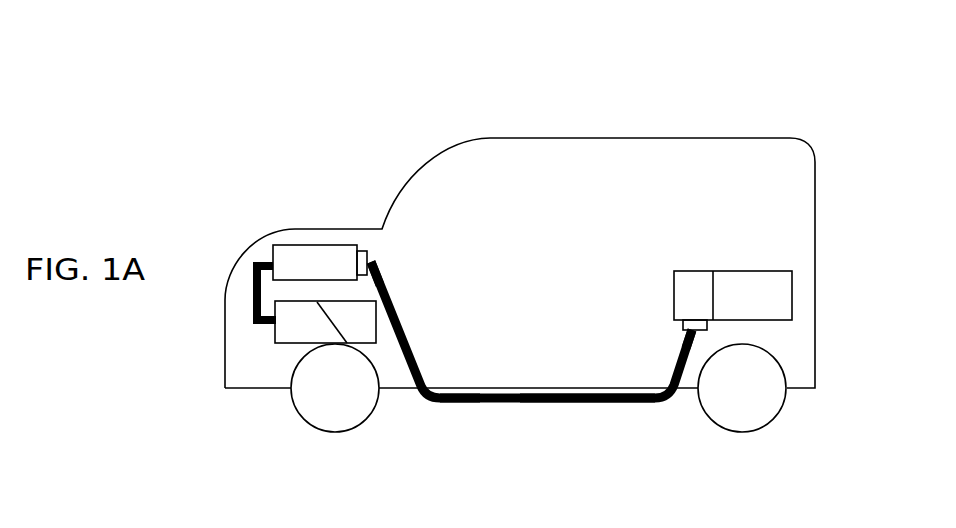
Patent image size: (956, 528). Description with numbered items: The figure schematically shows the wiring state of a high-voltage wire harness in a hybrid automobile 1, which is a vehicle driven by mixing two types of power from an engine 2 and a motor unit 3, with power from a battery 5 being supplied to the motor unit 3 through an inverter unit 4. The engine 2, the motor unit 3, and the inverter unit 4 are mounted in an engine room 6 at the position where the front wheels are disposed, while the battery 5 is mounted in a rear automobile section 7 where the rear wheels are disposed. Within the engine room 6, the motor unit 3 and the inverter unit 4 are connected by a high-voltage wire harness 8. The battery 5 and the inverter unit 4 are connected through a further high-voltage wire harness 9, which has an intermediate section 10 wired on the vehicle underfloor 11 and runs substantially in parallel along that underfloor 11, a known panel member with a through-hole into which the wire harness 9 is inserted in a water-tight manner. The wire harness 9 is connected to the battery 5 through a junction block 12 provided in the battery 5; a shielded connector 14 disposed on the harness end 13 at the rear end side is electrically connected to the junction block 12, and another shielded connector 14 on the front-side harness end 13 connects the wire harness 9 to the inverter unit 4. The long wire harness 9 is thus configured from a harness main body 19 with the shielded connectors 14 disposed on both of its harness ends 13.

The hybrid automobile 1 is at (568, 127).
The engine 2 is at (368, 332).
The motor unit 3 is at (285, 330).
The inverter unit 4 is at (295, 258).
The battery 5 is at (757, 283).
The engine room 6 is at (238, 365).
The rear automobile section 7 is at (798, 360).
The high-voltage wire harness 8 is at (254, 302).
The wire harness 9 is at (457, 408).
The intermediate section 10 is at (560, 405).
The vehicle underfloor 11 is at (613, 405).
The junction block 12 is at (693, 280).
The harness end 13 is at (386, 265).
The shielded connector 14 is at (369, 253).
The harness main body 19 is at (423, 367).